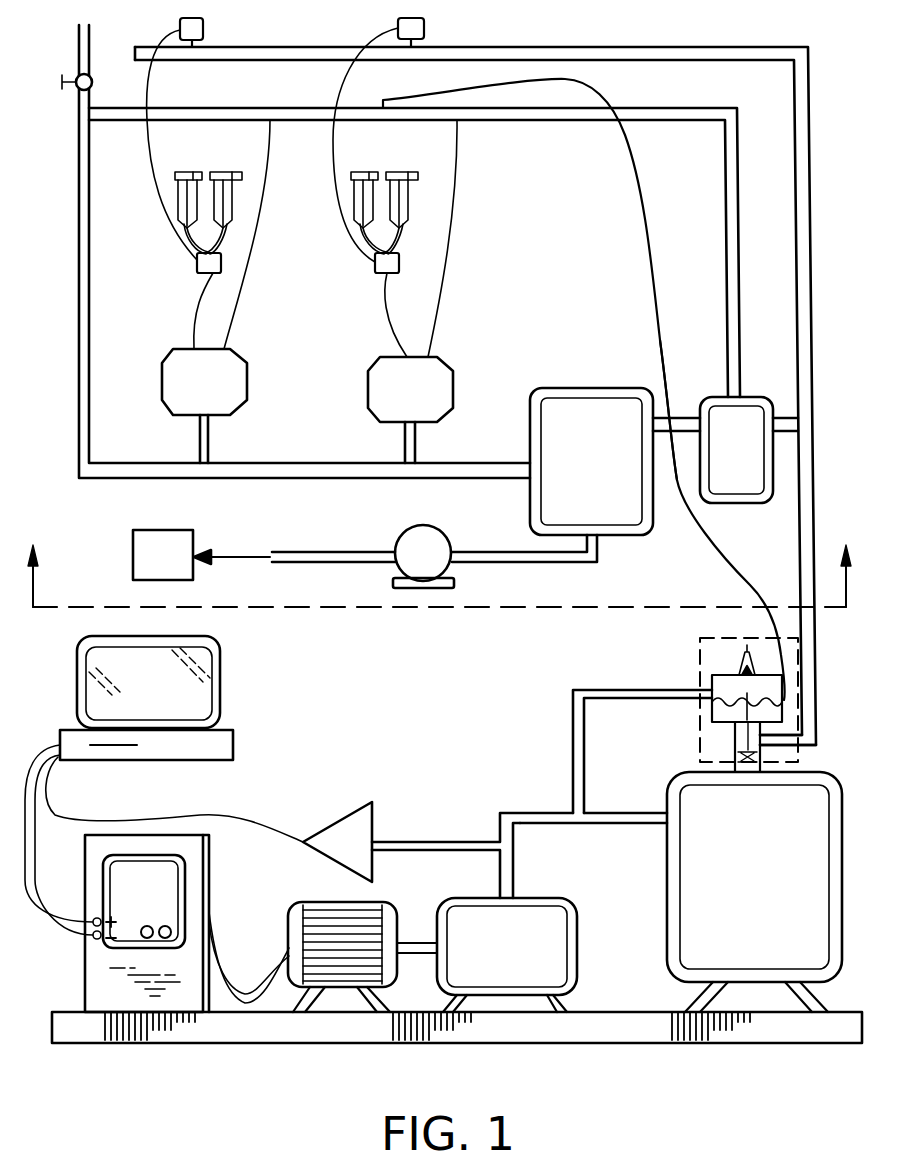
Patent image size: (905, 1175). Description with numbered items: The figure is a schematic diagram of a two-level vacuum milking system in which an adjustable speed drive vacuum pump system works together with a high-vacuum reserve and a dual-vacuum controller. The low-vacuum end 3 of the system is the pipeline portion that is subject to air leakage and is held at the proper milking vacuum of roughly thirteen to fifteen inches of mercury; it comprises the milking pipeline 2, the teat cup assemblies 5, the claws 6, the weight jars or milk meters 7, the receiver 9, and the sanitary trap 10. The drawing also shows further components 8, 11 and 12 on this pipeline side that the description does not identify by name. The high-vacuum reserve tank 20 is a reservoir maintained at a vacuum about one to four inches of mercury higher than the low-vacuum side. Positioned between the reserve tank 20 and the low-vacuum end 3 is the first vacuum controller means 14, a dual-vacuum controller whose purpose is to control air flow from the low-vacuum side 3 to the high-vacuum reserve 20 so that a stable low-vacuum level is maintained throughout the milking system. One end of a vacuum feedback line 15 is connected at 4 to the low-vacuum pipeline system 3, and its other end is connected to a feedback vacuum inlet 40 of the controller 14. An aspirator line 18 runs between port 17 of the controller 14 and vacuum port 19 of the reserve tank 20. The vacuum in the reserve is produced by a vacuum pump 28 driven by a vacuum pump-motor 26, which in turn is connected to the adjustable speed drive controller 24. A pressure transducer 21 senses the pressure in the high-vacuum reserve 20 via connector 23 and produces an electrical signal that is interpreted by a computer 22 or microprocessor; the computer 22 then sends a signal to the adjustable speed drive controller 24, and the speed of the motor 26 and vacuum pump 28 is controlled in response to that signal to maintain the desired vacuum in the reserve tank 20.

The milking pipeline 2 is at (321, 467).
The low-vacuum end pipeline system 3 is at (439, 576).
The feedback line connection 4 is at (570, 389).
The teat cup assembly 5 is at (296, 197).
The claw 6 is at (307, 300).
The weight jar or milk meter 7 is at (215, 398).
The transmitter 8 is at (297, 137).
The receiver 9 is at (602, 481).
The sanitary trap 10 is at (720, 468).
The pump 11 is at (410, 567).
The outlet 12 is at (148, 570).
The first vacuum controller means 14 is at (749, 686).
The vacuum feedback line 15 is at (678, 390).
The port 17 is at (712, 690).
The aspirator line 18 is at (623, 751).
The vacuum port 19 is at (667, 828).
The high-vacuum reserve tank 20 is at (733, 889).
The pressure transducer 21 is at (333, 857).
The computer 22 is at (165, 698).
The connector 23 is at (472, 855).
The adjustable speed drive controller 24 is at (187, 923).
The vacuum pump-motor 26 is at (362, 942).
The vacuum pump 28 is at (525, 955).
The feedback vacuum inlet 40 is at (783, 712).